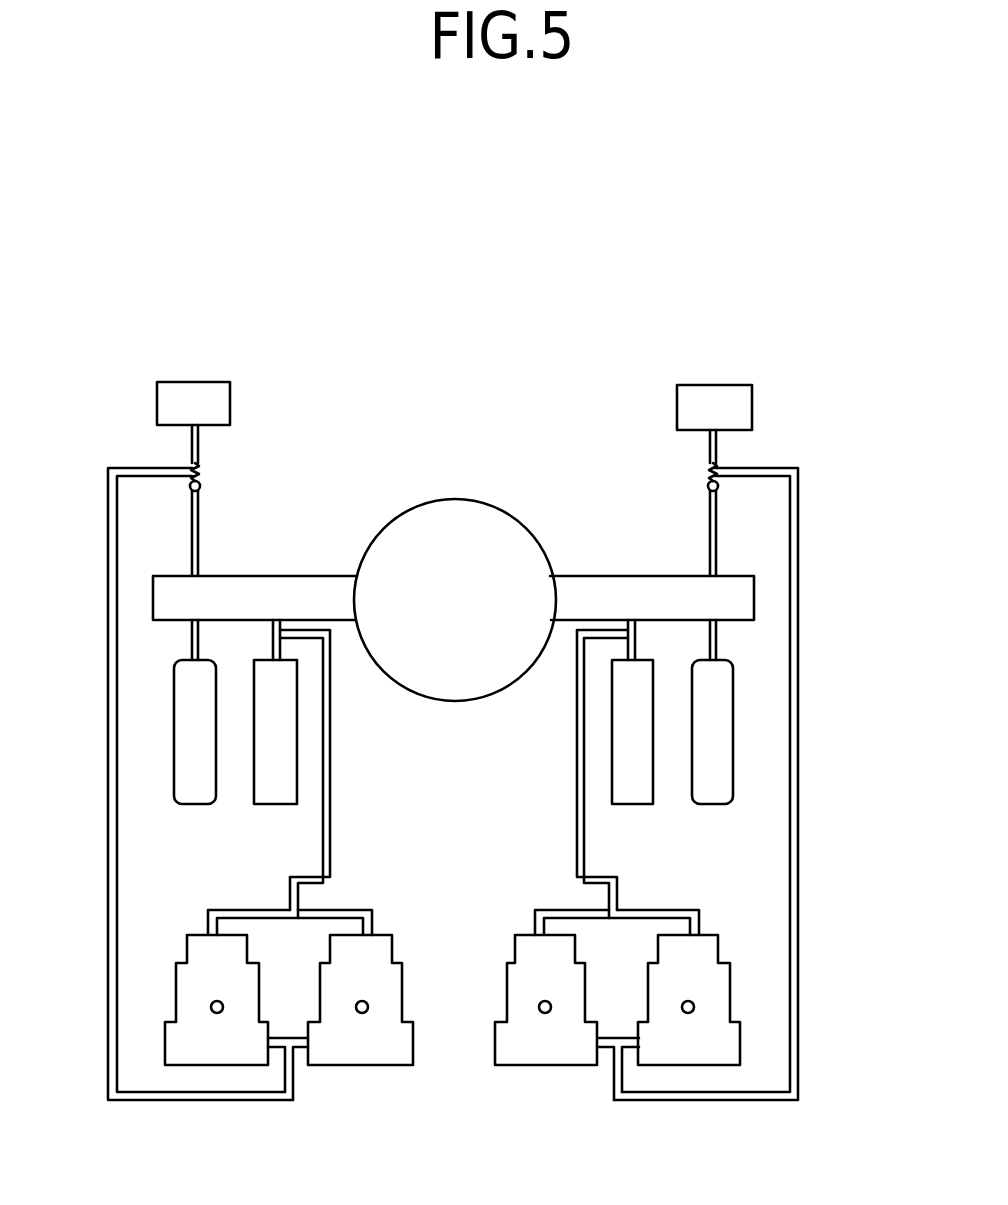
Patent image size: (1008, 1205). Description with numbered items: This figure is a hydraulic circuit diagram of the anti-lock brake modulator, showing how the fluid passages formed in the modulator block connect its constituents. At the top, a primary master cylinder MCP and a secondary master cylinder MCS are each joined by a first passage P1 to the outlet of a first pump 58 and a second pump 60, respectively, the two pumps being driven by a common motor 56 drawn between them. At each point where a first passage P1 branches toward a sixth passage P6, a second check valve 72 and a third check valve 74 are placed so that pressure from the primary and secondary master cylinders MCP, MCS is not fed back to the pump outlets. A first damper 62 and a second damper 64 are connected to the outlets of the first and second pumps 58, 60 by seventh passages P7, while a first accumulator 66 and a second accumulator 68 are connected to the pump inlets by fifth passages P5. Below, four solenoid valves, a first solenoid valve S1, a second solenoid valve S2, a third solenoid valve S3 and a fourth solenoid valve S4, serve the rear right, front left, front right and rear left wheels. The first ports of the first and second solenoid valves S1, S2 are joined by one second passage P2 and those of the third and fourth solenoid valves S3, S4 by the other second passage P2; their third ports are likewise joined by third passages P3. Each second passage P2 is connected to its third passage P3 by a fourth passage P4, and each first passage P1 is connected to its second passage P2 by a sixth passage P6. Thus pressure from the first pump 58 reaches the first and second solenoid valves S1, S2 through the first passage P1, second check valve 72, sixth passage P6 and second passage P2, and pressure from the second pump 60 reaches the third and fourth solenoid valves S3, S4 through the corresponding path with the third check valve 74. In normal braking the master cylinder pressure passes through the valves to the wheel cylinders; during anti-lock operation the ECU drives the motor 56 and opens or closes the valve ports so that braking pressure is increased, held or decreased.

The primary master cylinder MCP is at (193, 403).
The secondary master cylinder MCS is at (714, 407).
The motor 56 is at (440, 512).
The first pump 58 is at (270, 590).
The second pump 60 is at (603, 587).
The first damper 62 is at (198, 796).
The second damper 64 is at (722, 797).
The first accumulator 66 is at (283, 796).
The second accumulator 68 is at (630, 800).
The second check valve 72 is at (199, 470).
The third check valve 74 is at (712, 470).
The first passage P1 is at (198, 520).
The second passage P2 is at (288, 1037).
The third passage P3 is at (352, 908).
The fourth passage P4 is at (330, 780).
The fifth passage P5 is at (273, 640).
The sixth passage P6 is at (108, 766).
The seventh passage P7 is at (192, 643).
The first solenoid valve S1 is at (173, 1055).
The second solenoid valve S2 is at (397, 1055).
The third solenoid valve S3 is at (585, 1057).
The fourth solenoid valve S4 is at (723, 1060).